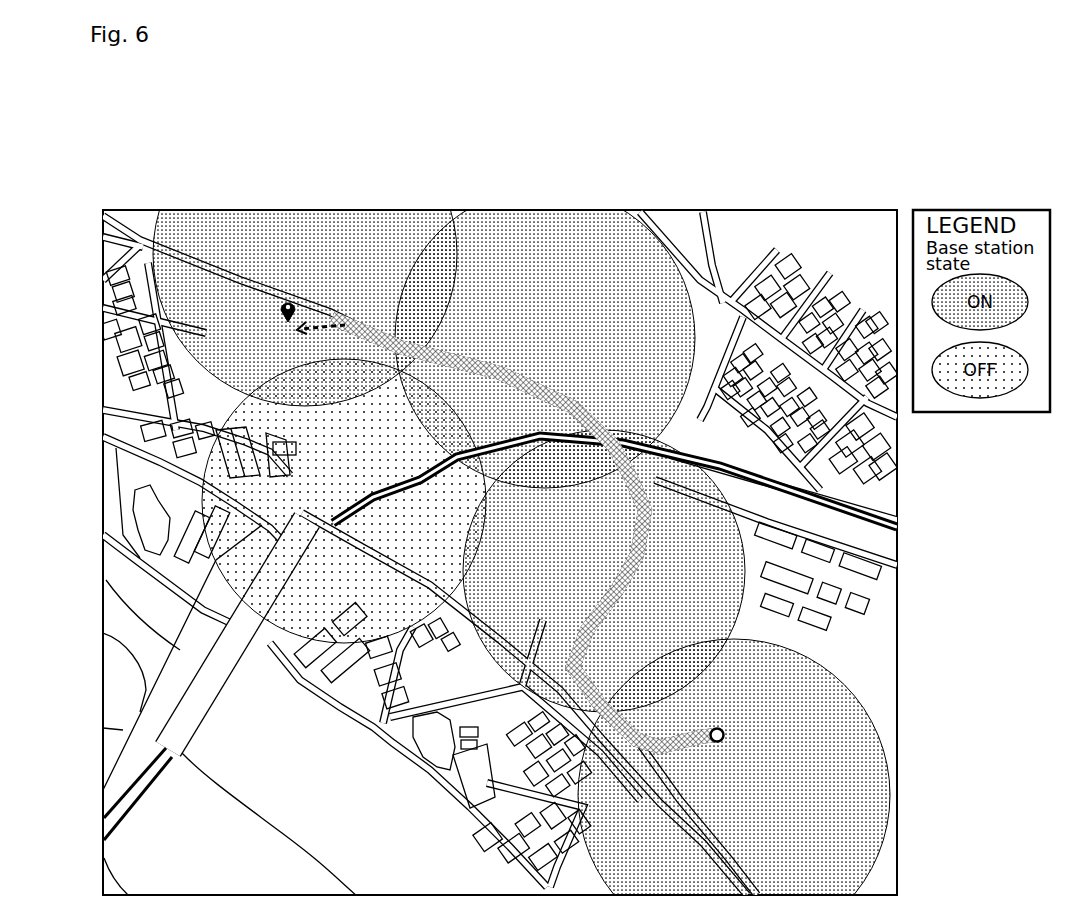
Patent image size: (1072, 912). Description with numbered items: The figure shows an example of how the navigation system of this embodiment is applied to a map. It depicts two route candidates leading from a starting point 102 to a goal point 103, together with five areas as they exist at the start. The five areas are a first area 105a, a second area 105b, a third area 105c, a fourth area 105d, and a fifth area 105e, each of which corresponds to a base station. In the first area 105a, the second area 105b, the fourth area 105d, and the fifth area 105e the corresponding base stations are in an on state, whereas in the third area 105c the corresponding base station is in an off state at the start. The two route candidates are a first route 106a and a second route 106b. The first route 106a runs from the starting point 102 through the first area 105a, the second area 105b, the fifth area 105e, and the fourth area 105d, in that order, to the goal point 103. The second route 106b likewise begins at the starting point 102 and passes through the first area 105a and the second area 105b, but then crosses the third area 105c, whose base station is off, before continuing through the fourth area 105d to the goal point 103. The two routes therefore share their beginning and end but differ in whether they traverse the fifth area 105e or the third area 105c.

The starting point 102 is at (725, 740).
The goal point 103 is at (283, 300).
The first area 105a is at (860, 833).
The second area 105b is at (750, 617).
The third area 105c is at (210, 515).
The fourth area 105d is at (200, 218).
The fifth area 105e is at (547, 218).
The first route 106a is at (767, 540).
The second route 106b is at (330, 520).